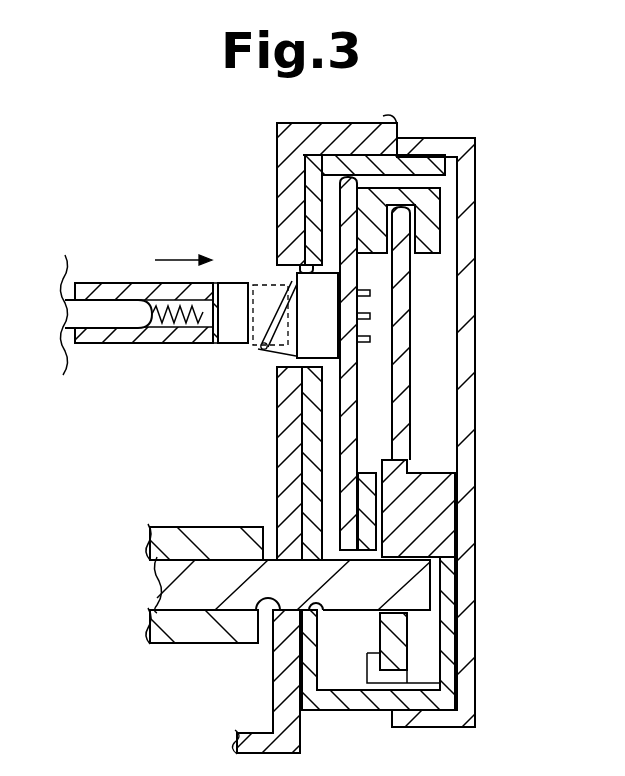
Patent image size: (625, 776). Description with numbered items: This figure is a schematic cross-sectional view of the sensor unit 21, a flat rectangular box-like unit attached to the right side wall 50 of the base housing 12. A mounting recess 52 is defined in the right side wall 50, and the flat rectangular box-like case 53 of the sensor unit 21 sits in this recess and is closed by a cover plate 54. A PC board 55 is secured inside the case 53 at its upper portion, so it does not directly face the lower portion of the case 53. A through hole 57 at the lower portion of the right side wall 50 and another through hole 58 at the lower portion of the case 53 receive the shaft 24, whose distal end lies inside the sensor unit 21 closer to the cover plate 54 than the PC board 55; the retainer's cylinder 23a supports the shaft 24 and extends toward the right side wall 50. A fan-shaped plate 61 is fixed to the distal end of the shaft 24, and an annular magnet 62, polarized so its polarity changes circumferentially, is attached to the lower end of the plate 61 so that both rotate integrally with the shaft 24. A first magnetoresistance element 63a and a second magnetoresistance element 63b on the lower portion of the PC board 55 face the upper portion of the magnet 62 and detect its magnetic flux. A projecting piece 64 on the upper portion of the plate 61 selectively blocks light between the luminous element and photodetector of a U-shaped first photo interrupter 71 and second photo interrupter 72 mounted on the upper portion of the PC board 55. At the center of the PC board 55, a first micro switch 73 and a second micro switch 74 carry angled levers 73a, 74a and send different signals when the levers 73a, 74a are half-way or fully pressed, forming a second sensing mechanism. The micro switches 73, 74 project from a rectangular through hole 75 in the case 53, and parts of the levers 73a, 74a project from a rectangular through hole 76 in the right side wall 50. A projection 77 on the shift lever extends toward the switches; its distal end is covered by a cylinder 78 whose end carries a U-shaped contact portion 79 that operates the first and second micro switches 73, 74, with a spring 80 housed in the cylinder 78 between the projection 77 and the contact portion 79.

The base housing 12 is at (275, 126).
The sensor unit 21 is at (490, 432).
The cylinder 23a is at (210, 527).
The shaft 24 is at (273, 614).
The right side wall 50 is at (364, 189).
The mounting recess 52 is at (305, 160).
The case 53 is at (430, 160).
The cover plate 54 is at (513, 210).
The PC board 55 is at (347, 388).
The through hole 57 is at (261, 606).
The through hole 58 is at (380, 633).
The fan-shaped plate 61 is at (421, 333).
The annular magnet 62 is at (382, 576).
The first magnetoresistance element 63a is at (365, 473).
The second magnetoresistance element 63b is at (456, 491).
The projecting piece 64 is at (404, 232).
The first photo interrupter 71 is at (449, 231).
The second photo interrupter 72 is at (428, 215).
The first micro switch 73 is at (278, 363).
The lever 73a is at (221, 392).
The second micro switch 74 is at (267, 352).
The lever 74a is at (258, 349).
The through hole 75 is at (270, 235).
The through hole 76 is at (303, 268).
The projection 77 is at (83, 313).
The cylinder 78 is at (129, 304).
The contact portion 79 is at (224, 345).
The spring 80 is at (162, 338).